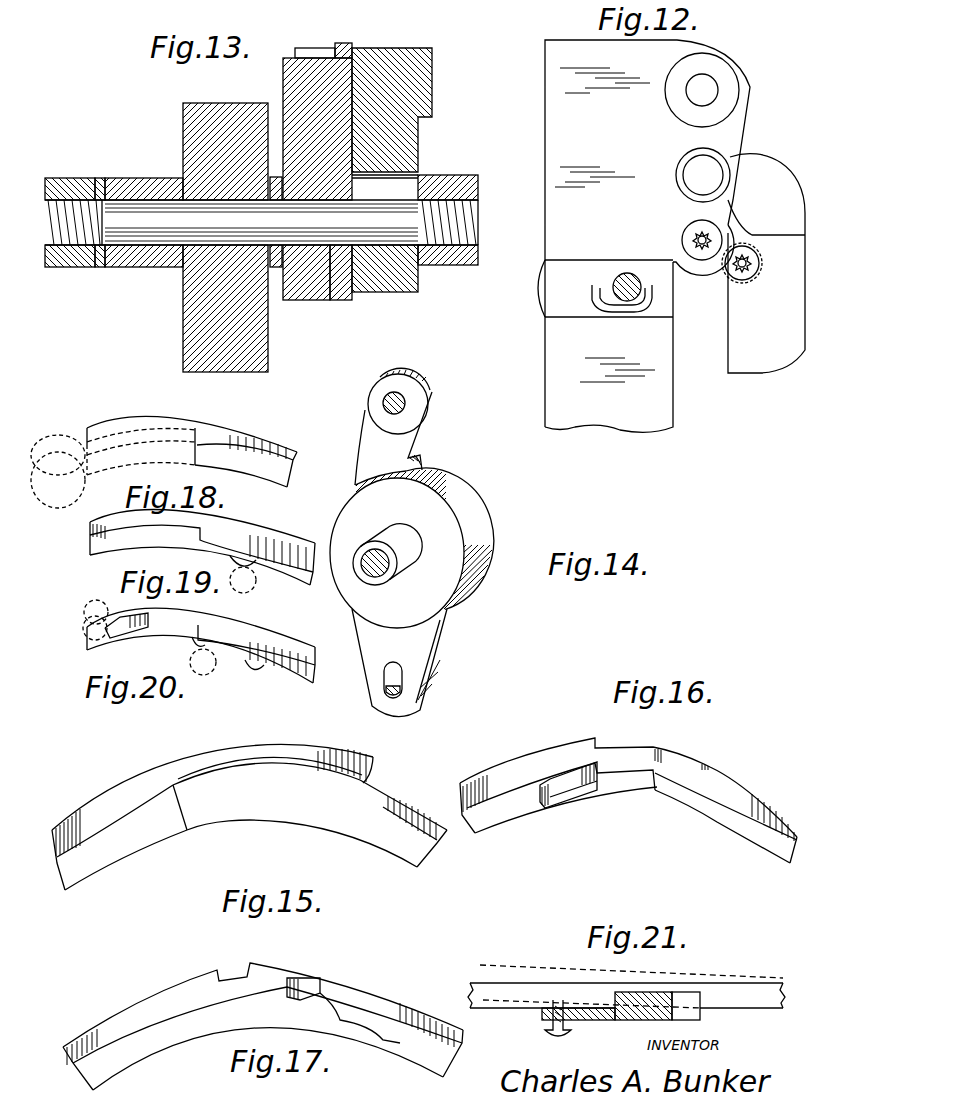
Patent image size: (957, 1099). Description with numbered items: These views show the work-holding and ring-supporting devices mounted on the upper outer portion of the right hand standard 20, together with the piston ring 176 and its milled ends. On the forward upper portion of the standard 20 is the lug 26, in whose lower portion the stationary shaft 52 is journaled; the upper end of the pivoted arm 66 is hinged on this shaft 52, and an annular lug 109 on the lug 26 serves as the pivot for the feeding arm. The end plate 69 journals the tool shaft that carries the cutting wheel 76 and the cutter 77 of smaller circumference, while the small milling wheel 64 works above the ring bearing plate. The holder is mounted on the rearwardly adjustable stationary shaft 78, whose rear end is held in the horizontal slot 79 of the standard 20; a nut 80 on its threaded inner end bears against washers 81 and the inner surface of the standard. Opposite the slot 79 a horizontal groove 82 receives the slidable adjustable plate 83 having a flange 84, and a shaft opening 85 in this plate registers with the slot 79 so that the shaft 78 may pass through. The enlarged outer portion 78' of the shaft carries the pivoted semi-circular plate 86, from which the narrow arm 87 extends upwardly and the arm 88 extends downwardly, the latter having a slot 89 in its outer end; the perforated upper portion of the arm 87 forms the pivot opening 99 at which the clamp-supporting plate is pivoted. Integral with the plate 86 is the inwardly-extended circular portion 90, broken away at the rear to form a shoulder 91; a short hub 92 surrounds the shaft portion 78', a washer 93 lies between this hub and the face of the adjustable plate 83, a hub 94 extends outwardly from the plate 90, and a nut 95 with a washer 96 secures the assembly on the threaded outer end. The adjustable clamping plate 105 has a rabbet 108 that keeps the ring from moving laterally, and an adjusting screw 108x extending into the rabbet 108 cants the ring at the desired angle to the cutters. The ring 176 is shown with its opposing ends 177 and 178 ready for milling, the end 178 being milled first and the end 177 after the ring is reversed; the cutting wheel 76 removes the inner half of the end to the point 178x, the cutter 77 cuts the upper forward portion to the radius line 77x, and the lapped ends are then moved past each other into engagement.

In FIG. 13, the standard 20 is at (386, 292).
In FIG. 12, the standard 20 is at (555, 142).
In FIG. 12, the lug 26 is at (736, 60).
In FIG. 12, the stationary shaft 52 is at (700, 163).
In FIG. 12, the milling wheel 64 is at (698, 236).
In FIG. 19, the milling wheel 64 is at (257, 586).
In FIG. 20, the milling wheel 64 is at (217, 671).
In FIG. 12, the pivoted arm 66 is at (762, 182).
In FIG. 12, the end plate 69 is at (766, 332).
In FIG. 12, the cutting wheel 76 is at (740, 285).
In FIG. 18, the cutting wheel 76 is at (56, 497).
In FIG. 12, the cutter 77 is at (735, 275).
In FIG. 20, the cutter 77 is at (90, 610).
In FIG. 20, the radius line 77x is at (113, 627).
In FIG. 13, the stationary shaft 78 is at (261, 270).
In FIG. 12, the stationary shaft 78 is at (575, 277).
In FIG. 13, the outer portion of shaft 78' is at (103, 251).
In FIG. 13, the horizontal slot 79 is at (418, 177).
In FIG. 12, the horizontal slot 79 is at (600, 292).
In FIG. 13, the nut 80 is at (450, 265).
In FIG. 13, the washers 81 is at (422, 262).
In FIG. 12, the horizontal groove 82 is at (580, 318).
In FIG. 13, the adjustable plate 83 is at (316, 300).
In FIG. 12, the adjustable plate 83 is at (607, 318).
In FIG. 13, the flange 84 is at (346, 52).
In FIG. 12, the flange 84 is at (540, 300).
In FIG. 13, the shaft opening 85 is at (330, 300).
In FIG. 13, the semi-circular plate 86 is at (250, 113).
In FIG. 14, the semi-circular plate 86 is at (485, 528).
In FIG. 14, the arm 87 is at (418, 438).
In FIG. 14, the arm 88 is at (430, 680).
In FIG. 14, the slot 89 is at (385, 682).
In FIG. 13, the circular portion 90 is at (208, 372).
In FIG. 14, the circular portion 90 is at (377, 483).
In FIG. 18, the circular portion 90 is at (313, 456).
In FIG. 14, the shoulder 91 is at (337, 510).
In FIG. 19, the shoulder 91 is at (330, 508).
In FIG. 13, the hub 92 is at (278, 268).
In FIG. 13, the washer 93 is at (277, 177).
In FIG. 13, the hub 94 is at (143, 180).
In FIG. 14, the hub 94 is at (410, 573).
In FIG. 13, the nut 95 is at (60, 178).
In FIG. 13, the washer 96 is at (100, 178).
In FIG. 14, the pivot hole 99 is at (405, 403).
In FIG. 21, the clamping plate 105 is at (652, 1000).
In FIG. 21, the rabbet 108 is at (615, 1012).
In FIG. 21, the adjusting screw 108x is at (548, 1033).
In FIG. 12, the annular lug 109 is at (720, 112).
In FIG. 15, the ring 176 is at (75, 867).
In FIG. 16, the ring 176 is at (628, 800).
In FIG. 17, the ring 176 is at (263, 1026).
In FIG. 21, the ring 176 is at (570, 990).
In FIG. 15, the ring end 177 is at (272, 810).
In FIG. 18, the ring end 178 is at (128, 425).
In FIG. 15, the ring end 178 is at (232, 752).
In FIG. 18, the point 178x is at (210, 432).